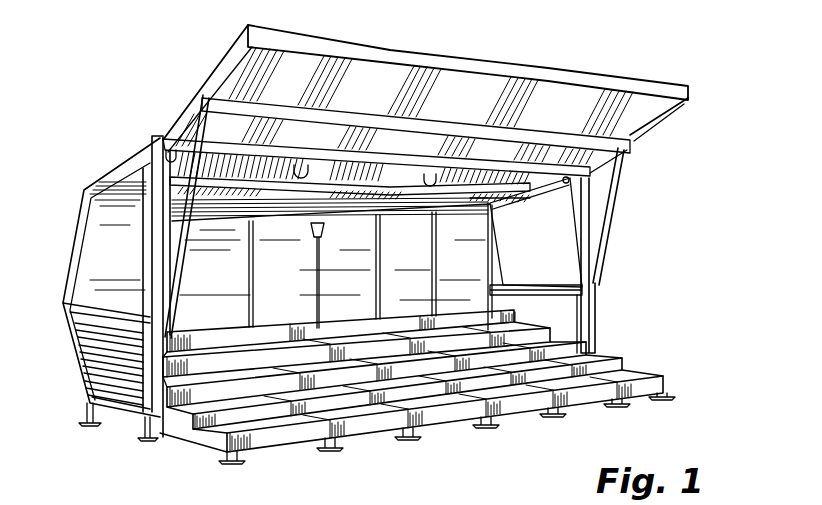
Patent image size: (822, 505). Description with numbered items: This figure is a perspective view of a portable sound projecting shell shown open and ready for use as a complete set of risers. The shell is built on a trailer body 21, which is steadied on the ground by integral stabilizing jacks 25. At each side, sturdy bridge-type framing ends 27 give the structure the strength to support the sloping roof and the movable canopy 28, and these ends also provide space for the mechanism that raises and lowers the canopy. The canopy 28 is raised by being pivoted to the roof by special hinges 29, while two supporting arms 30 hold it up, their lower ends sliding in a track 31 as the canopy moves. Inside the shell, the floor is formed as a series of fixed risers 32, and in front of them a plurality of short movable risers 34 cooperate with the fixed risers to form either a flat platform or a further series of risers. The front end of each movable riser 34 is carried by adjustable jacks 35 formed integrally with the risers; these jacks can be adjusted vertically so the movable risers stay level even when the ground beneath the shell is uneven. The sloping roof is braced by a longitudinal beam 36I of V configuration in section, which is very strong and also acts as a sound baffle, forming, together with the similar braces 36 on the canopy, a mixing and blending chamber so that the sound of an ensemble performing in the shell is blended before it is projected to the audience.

The trailer body 21 is at (78, 231).
The integral stabilizing jacks 25 is at (143, 422).
The bridge-type framing ends 27 is at (596, 264).
The movable canopy 28 is at (478, 54).
The special hinges 29 is at (302, 167).
The supporting arms 30 is at (182, 232).
The track 31 is at (538, 287).
The fixed risers 32 is at (463, 321).
The short movable risers 34 is at (207, 445).
The adjustable jacks 35 is at (402, 437).
The braces 36 is at (389, 60).
The longitudinal beam 36I is at (371, 183).